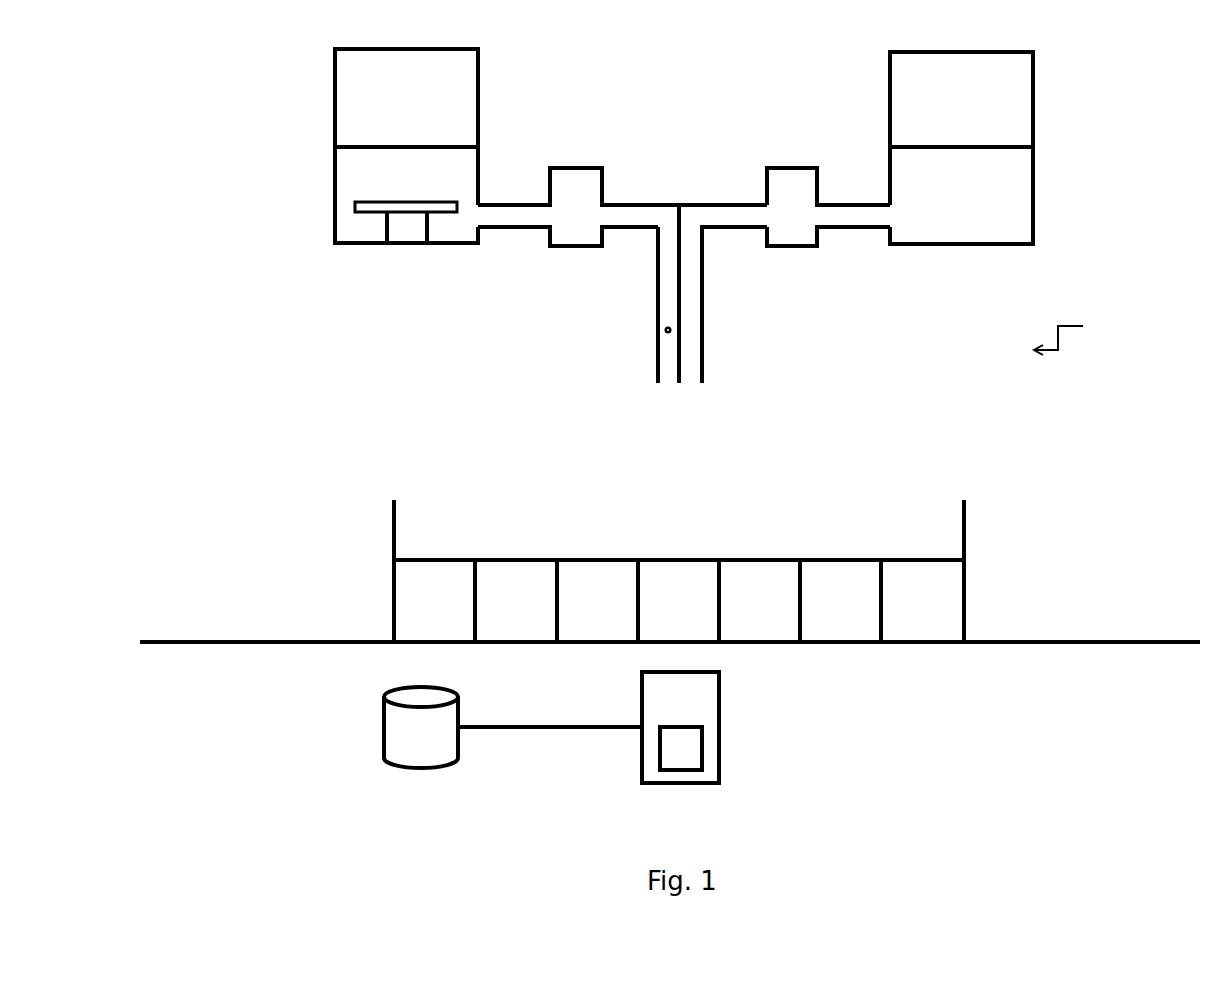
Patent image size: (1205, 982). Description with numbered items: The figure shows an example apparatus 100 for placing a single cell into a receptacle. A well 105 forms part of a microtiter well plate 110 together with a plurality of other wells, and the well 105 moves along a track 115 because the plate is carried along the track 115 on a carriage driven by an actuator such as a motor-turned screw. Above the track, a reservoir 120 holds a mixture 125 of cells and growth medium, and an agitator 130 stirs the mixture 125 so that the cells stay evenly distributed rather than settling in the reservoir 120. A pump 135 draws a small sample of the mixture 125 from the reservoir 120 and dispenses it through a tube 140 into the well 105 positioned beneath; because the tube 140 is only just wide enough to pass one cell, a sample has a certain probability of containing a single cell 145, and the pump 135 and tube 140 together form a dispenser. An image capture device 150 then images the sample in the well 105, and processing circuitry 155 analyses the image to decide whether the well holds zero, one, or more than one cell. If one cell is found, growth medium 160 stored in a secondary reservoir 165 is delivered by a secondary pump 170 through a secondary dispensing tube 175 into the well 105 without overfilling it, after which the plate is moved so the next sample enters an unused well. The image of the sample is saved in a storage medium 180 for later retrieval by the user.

The apparatus 100 is at (1090, 332).
The well 105 is at (680, 558).
The microtiter well plate 110 is at (966, 522).
The track 115 is at (1072, 643).
The reservoir 120 is at (334, 168).
The mixture 125 is at (352, 227).
The agitator 130 is at (437, 213).
The pump 135 is at (575, 167).
The tube 140 is at (657, 258).
The single cell 145 is at (661, 333).
The image capture device 150 is at (720, 705).
The processing circuitry 155 is at (658, 748).
The growth medium 160 is at (995, 193).
The secondary reservoir 165 is at (890, 80).
The secondary pump 170 is at (789, 167).
The secondary dispensing tube 175 is at (703, 282).
The storage medium 180 is at (385, 740).